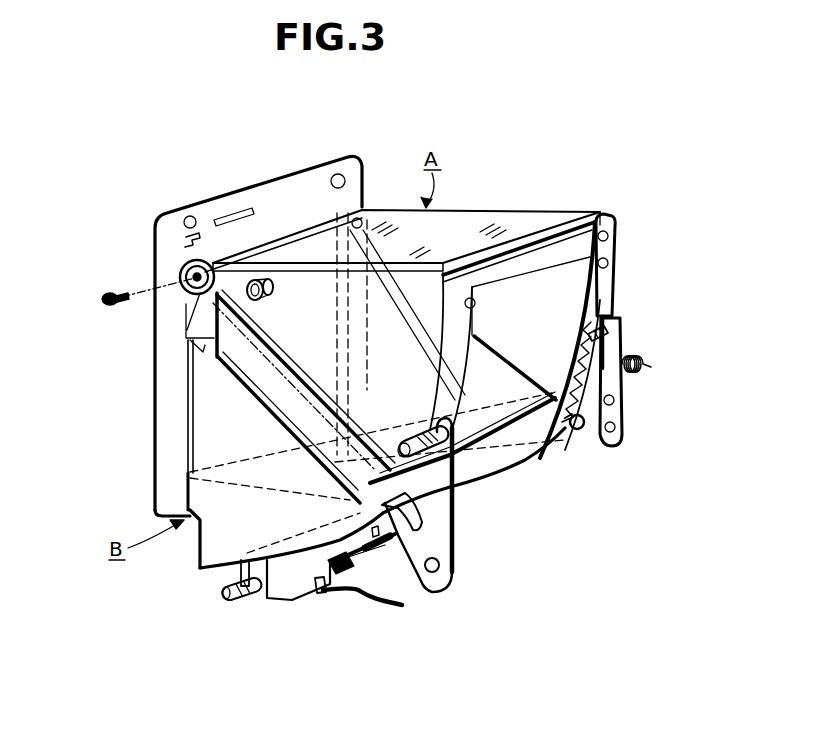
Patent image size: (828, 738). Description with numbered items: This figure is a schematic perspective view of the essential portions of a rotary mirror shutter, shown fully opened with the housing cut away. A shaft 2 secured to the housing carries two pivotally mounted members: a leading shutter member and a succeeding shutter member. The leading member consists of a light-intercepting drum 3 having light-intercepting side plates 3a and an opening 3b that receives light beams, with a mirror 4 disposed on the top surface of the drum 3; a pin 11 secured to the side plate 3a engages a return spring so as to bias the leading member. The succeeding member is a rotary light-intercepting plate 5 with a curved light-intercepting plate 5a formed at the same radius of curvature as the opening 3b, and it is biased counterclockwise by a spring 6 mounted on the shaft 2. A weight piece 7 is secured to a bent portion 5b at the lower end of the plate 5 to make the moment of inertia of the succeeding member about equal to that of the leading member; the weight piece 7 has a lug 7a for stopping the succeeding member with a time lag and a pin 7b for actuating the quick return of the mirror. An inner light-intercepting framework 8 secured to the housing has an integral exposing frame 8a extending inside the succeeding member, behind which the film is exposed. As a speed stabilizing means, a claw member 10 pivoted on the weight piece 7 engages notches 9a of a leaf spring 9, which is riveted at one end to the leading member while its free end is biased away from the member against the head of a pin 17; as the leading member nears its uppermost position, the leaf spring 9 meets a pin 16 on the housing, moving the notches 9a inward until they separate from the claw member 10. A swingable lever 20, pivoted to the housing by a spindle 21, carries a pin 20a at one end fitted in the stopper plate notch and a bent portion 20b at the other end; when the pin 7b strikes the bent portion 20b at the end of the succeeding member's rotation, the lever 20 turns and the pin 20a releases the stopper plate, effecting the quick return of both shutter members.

The shaft 2 is at (104, 299).
The light-intercepting drum 3 is at (553, 245).
The light-intercepting side plates 3a is at (303, 362).
The opening 3b is at (475, 304).
The mirror 4 is at (487, 218).
The rotary light-intercepting plate 5 is at (200, 548).
The curved light-intercepting plate 5a is at (500, 476).
The bent portion 5b is at (243, 578).
The spring 6 is at (193, 350).
The weight piece 7 is at (278, 595).
The lug 7a is at (316, 595).
The pin 7b is at (233, 602).
The inner light-intercepting framework 8 is at (162, 437).
The exposing frame 8a is at (478, 405).
The leaf spring 9 is at (607, 278).
The notches 9a is at (583, 362).
The claw member 10 is at (388, 548).
The pin 11 is at (259, 298).
The pin 16 is at (605, 316).
The pin 17 is at (578, 432).
The swingable lever 20 is at (455, 540).
The pin 20a is at (415, 435).
The bent portion 20b is at (457, 500).
The spindle 21 is at (356, 596).